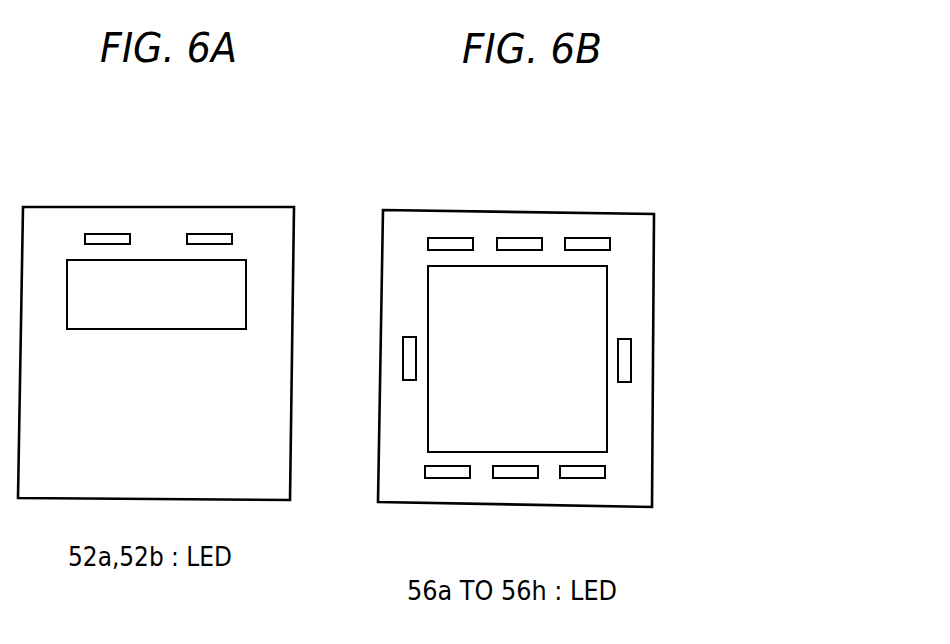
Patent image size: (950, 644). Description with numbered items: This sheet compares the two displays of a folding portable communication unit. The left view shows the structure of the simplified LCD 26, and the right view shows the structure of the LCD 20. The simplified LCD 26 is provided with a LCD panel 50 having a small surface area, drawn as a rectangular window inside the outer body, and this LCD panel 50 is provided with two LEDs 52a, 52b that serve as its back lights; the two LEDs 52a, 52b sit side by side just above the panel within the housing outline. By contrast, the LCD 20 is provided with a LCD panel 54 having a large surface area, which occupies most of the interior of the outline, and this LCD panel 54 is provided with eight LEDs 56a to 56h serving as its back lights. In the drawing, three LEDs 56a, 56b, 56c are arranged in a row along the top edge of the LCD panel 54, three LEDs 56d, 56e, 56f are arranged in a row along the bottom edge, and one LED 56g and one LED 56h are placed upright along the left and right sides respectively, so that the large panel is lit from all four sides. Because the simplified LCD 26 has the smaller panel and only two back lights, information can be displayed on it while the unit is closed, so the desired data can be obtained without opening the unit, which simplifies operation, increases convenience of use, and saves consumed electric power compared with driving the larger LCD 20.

In FIG. 6A, the simplified LCD 26 is at (252, 190).
In FIG. 6A, the LED 52a is at (105, 234).
In FIG. 6A, the LED 52b is at (206, 234).
In FIG. 6A, the LCD panel 50 is at (167, 329).
In FIG. 6B, the LCD 20 is at (628, 198).
In FIG. 6B, the LCD panel 54 is at (607, 417).
In FIG. 6B, the LED 56a is at (450, 238).
In FIG. 6B, the LED 56b is at (519, 238).
In FIG. 6B, the LED 56c is at (585, 238).
In FIG. 6B, the LED 56d is at (447, 478).
In FIG. 6B, the LED 56e is at (514, 478).
In FIG. 6B, the LED 56f is at (583, 478).
In FIG. 6B, the LED 56g is at (409, 353).
In FIG. 6B, the LED 56h is at (621, 352).